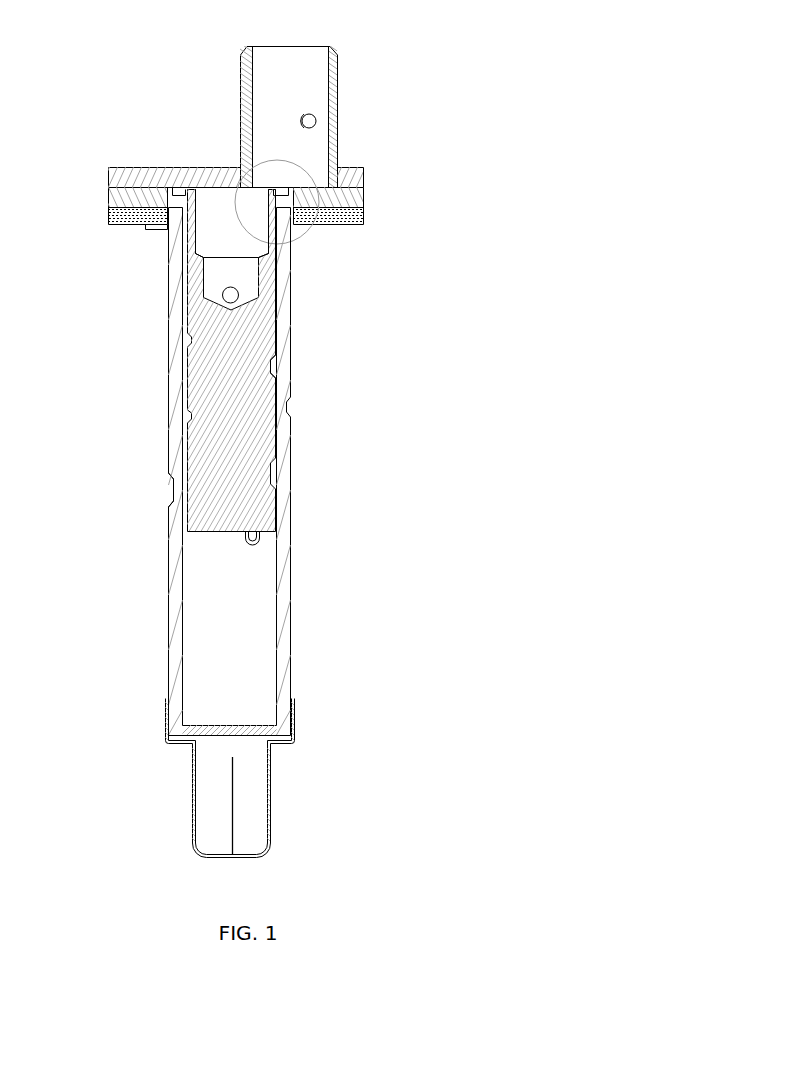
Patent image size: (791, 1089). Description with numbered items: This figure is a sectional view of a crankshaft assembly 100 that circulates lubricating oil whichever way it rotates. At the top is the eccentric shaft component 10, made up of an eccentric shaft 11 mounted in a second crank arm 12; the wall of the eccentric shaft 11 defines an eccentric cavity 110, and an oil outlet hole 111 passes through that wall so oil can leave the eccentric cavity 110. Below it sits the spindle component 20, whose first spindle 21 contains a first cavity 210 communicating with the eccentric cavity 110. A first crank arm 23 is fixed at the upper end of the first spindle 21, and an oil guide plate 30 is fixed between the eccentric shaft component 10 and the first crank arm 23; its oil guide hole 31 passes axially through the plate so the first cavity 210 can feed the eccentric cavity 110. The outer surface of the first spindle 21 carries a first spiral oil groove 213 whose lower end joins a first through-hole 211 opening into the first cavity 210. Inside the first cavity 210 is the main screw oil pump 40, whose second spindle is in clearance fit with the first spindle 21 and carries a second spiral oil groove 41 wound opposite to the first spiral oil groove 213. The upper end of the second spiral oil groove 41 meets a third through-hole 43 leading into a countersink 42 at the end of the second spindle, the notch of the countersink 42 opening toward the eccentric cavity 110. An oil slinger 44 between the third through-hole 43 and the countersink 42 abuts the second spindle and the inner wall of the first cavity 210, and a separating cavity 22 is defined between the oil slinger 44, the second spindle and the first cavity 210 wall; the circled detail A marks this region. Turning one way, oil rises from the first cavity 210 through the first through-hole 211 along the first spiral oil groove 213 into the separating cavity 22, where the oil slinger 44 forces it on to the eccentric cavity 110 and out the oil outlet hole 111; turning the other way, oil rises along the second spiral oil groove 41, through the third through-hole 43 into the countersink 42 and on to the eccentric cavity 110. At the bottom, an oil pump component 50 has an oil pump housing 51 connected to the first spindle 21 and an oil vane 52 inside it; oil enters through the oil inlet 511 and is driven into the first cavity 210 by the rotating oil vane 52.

The crankshaft assembly 100 is at (385, 26).
The eccentric shaft component 10 is at (113, 45).
The eccentric shaft 11 is at (246, 93).
The eccentric cavity 110 is at (302, 152).
The oil outlet hole 111 is at (312, 118).
The second crank arm 12 is at (200, 172).
The oil guide plate 30 is at (125, 197).
The oil guide hole 31 is at (313, 200).
The first crank arm 23 is at (327, 216).
The enlarged detail region A is at (306, 237).
The separating cavity 22 is at (280, 250).
The oil slinger 44 is at (281, 281).
The countersink 42 is at (223, 231).
The third through-hole 43 is at (228, 297).
The second spiral oil groove 41 is at (274, 372).
The main screw oil pump 40 is at (248, 425).
The first spiral oil groove 213 is at (170, 490).
The first through-hole 211 is at (258, 539).
The first spindle 21 is at (177, 584).
The spindle component 20 is at (288, 623).
The first cavity 210 is at (220, 627).
The oil pump component 50 is at (102, 763).
The oil pump housing 51 is at (190, 760).
The oil vane 52 is at (232, 790).
The oil inlet 511 is at (238, 861).